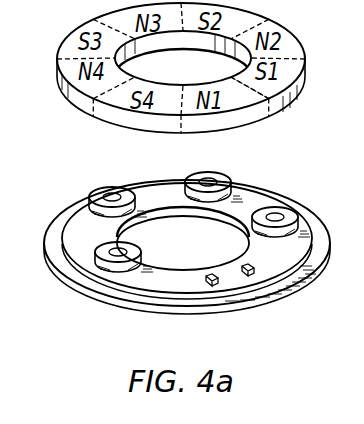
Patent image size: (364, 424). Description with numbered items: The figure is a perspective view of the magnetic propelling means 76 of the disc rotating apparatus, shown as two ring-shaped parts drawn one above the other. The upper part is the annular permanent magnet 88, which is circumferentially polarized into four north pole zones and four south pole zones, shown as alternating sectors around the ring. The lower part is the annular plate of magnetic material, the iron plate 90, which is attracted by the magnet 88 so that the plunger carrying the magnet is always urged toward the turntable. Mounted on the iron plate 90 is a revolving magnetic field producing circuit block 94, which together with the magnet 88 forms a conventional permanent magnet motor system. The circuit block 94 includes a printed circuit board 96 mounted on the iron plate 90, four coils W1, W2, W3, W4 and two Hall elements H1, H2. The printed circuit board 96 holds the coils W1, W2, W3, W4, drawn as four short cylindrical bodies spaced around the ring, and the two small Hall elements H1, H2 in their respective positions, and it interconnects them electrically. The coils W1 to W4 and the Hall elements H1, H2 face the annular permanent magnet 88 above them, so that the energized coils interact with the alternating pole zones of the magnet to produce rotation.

The magnetic propelling means 76 is at (92, 122).
The annular permanent magnet 88 is at (242, 90).
The iron plate 90 is at (126, 298).
The revolving magnetic field producing circuit block 94 is at (281, 202).
The printed circuit board 96 is at (283, 252).
The coil W1 is at (244, 233).
The coil W2 is at (190, 178).
The coil W3 is at (90, 197).
The coil W4 is at (100, 283).
The Hall element H1 is at (210, 287).
The Hall element H2 is at (246, 277).